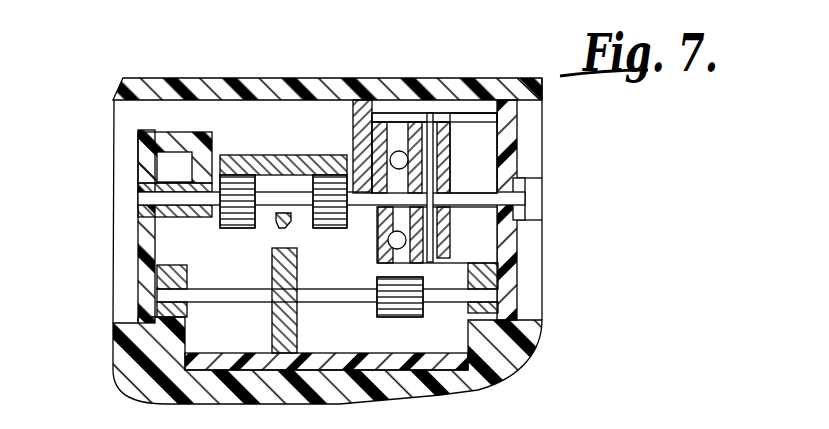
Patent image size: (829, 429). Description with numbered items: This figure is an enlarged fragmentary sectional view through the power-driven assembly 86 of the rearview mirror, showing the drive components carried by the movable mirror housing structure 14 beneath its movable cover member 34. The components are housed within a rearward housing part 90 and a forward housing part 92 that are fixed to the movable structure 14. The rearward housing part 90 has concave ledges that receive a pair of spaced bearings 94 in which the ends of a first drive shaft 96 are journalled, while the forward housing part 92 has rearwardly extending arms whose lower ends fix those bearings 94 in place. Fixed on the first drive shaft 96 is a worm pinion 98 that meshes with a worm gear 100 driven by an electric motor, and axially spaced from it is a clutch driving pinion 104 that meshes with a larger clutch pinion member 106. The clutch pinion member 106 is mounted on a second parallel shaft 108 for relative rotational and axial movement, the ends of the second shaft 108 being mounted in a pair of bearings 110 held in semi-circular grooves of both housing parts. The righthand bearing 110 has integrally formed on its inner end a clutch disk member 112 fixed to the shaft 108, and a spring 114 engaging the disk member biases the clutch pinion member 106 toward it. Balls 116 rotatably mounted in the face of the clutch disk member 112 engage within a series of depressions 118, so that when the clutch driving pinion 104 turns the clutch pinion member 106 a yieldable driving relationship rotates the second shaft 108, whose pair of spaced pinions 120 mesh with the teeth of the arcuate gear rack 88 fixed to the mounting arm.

The movable mirror housing structure 14 is at (118, 353).
The movable cover member 34 is at (187, 97).
The power-driven assembly 86 is at (452, 80).
The arcuate gear rack 88 is at (332, 155).
The rearward housing part 90 is at (147, 273).
The forward housing part 92 is at (147, 164).
The bearings 94 is at (507, 273).
The first drive shaft 96 is at (237, 278).
The worm pinion 98 is at (298, 271).
The worm gear 100 is at (280, 230).
The clutch driving pinion 104 is at (396, 316).
The clutch pinion member 106 is at (400, 122).
The second shaft 108 is at (147, 204).
The bearings 110 is at (145, 234).
The clutch disk member 112 is at (372, 140).
The spring 114 is at (400, 153).
The balls 116 is at (408, 162).
The depressions 118 is at (418, 232).
The spaced pinions 120 is at (332, 157).